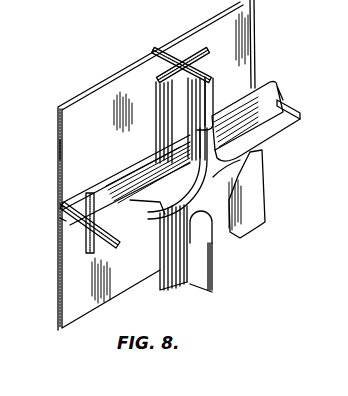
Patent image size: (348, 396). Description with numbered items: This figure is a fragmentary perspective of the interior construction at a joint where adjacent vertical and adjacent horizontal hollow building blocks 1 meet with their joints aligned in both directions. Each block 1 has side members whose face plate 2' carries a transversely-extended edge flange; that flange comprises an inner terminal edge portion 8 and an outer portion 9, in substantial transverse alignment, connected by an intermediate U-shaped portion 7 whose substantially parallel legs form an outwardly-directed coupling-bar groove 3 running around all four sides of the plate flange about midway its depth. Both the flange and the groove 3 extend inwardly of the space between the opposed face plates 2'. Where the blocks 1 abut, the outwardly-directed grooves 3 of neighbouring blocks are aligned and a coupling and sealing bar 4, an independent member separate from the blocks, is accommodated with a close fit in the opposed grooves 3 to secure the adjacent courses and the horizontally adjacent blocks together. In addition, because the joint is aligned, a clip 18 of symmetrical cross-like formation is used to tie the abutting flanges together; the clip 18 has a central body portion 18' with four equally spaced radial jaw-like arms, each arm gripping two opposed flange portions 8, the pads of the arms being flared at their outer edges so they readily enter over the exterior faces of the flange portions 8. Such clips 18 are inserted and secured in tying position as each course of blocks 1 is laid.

The hollow building block 1 is at (86, 89).
The face plate 2' is at (37, 146).
The coupling-bar groove 3 is at (156, 62).
The coupling and sealing bar 4 is at (199, 50).
The U-shaped portion 7 is at (112, 187).
The inner terminal edge portion 8 is at (204, 73).
The outer portion 9 is at (62, 205).
The clip 18 is at (257, 178).
The central body portion 18' is at (226, 216).